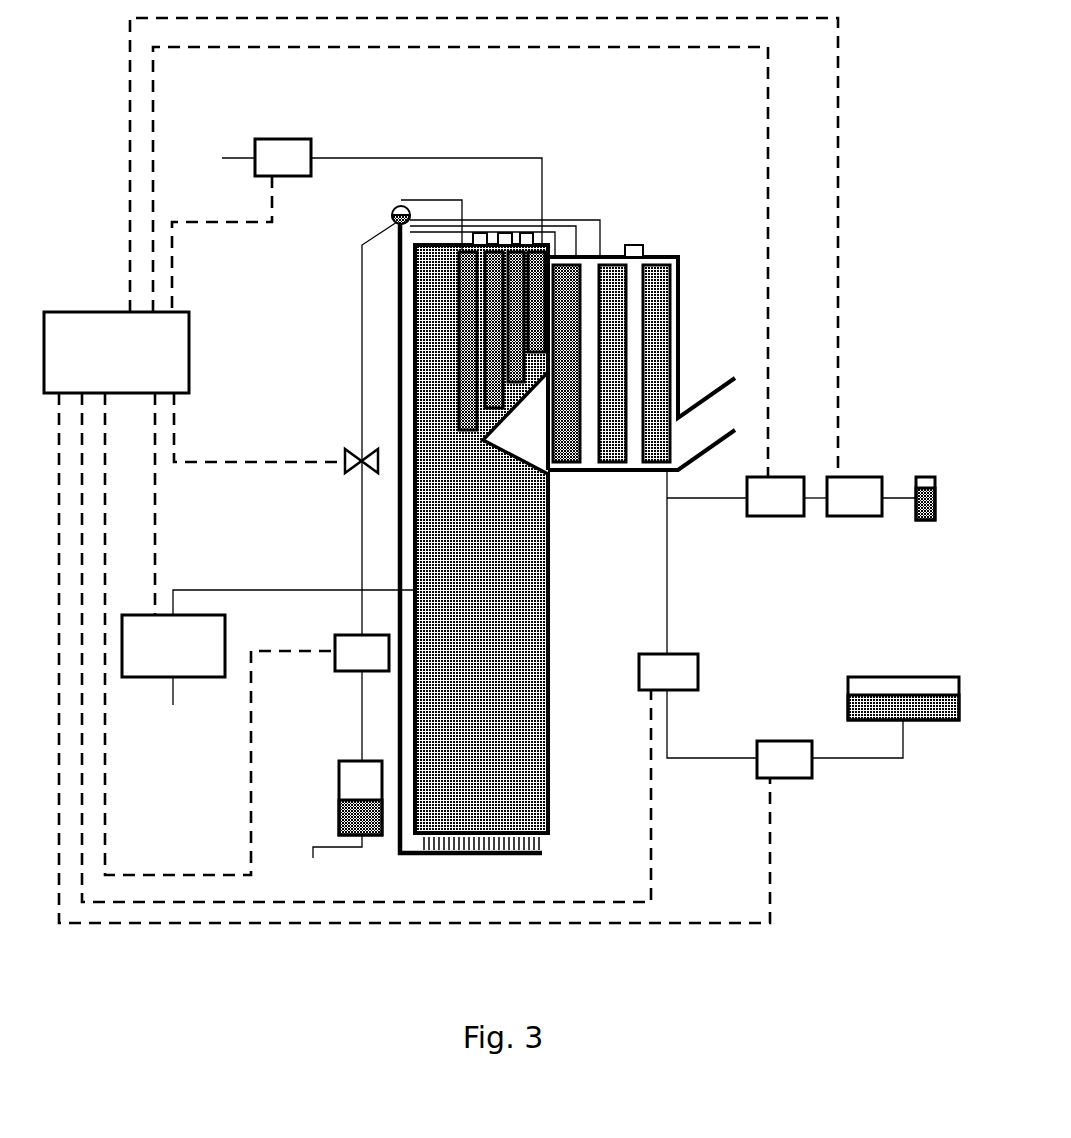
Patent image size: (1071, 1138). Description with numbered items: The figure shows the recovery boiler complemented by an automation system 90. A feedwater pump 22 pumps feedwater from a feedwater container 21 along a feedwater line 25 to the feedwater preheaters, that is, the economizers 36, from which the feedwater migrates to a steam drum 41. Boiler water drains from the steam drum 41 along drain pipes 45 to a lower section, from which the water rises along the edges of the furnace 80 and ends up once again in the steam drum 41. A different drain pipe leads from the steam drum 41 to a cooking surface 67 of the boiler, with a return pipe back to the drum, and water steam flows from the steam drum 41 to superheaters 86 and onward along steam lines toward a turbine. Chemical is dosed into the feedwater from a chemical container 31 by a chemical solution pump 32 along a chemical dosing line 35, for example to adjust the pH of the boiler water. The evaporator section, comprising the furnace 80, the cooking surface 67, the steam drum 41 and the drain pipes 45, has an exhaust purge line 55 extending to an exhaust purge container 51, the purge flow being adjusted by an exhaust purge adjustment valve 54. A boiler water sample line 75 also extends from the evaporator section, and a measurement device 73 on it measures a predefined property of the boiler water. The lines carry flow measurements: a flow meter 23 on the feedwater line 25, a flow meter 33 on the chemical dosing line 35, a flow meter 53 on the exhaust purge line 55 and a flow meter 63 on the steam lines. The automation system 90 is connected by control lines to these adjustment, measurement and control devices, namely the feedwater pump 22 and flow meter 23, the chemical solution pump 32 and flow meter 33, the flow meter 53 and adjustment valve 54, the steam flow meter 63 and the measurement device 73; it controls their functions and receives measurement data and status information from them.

The feedwater container 21 is at (908, 677).
The feedwater pump 22 is at (782, 741).
The flow meter of the feedwater line 23 is at (683, 654).
The feedwater line 25 is at (663, 593).
The chemical container 31 is at (925, 477).
The chemical solution pump 32 is at (850, 477).
The flow meter of the chemical dosing line 33 is at (785, 477).
The chemical dosing line 35 is at (702, 500).
The economizers 36 is at (615, 325).
The steam drum 41 is at (393, 208).
The drain pipes 45 is at (398, 400).
The exhaust purge container 51 is at (338, 778).
The flow meter of the exhaust purge line 53 is at (333, 663).
The exhaust purge adjustment valve 54 is at (345, 452).
The exhaust purge line 55 is at (360, 325).
The flow meter of the steam lines 63 is at (285, 138).
The cooking surface 67 is at (568, 470).
The measurement device 73 is at (148, 678).
The boiler water sample line 75 is at (280, 590).
The furnace 80 is at (468, 614).
The superheaters 86 is at (490, 408).
The automation system 90 is at (83, 312).